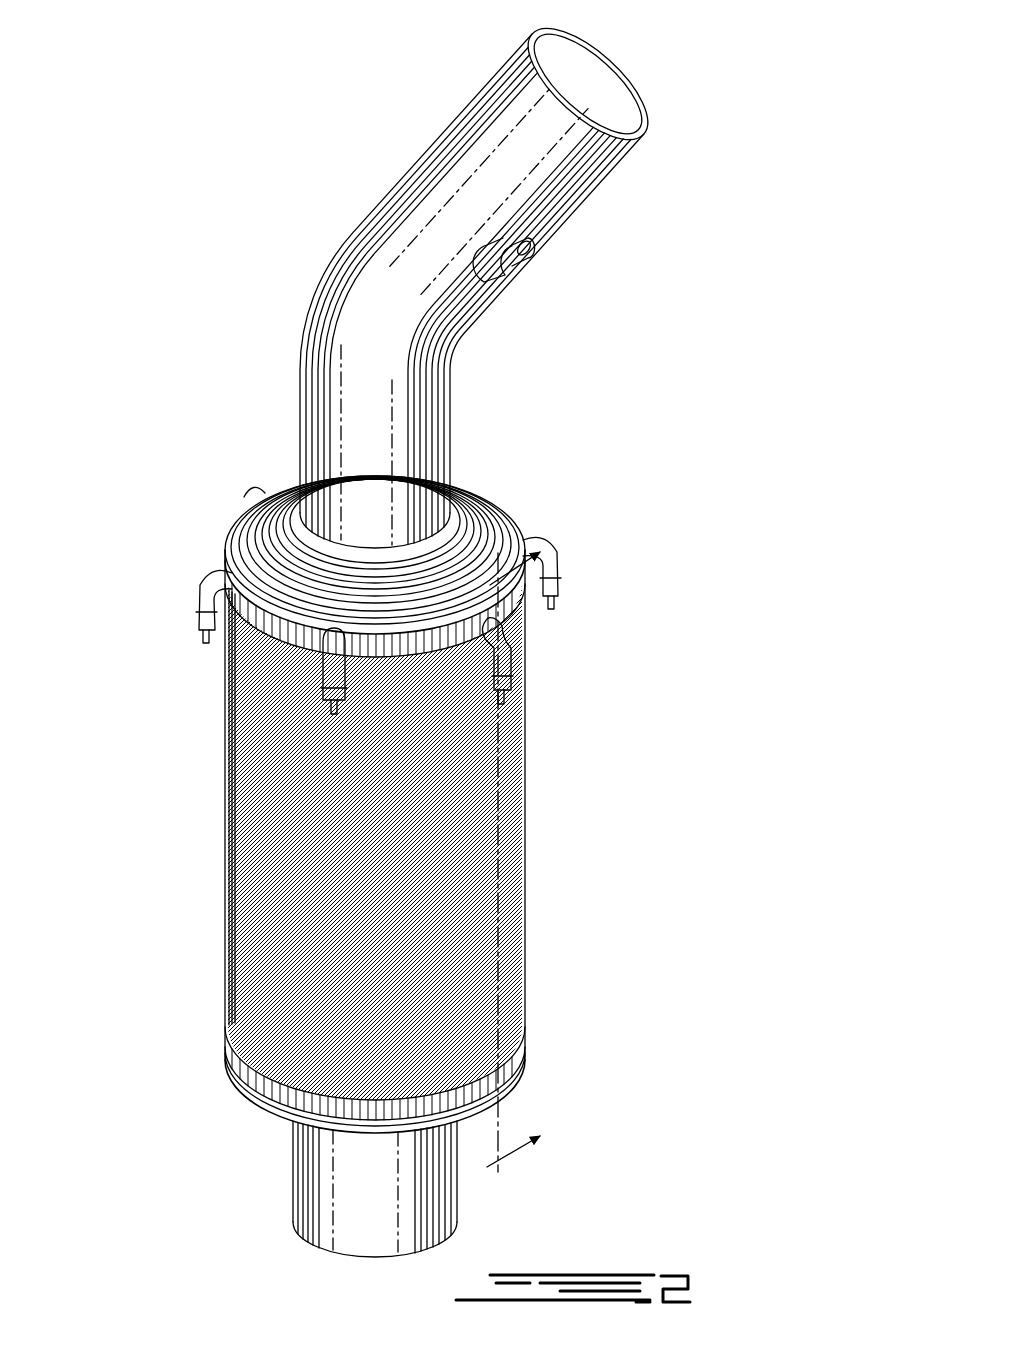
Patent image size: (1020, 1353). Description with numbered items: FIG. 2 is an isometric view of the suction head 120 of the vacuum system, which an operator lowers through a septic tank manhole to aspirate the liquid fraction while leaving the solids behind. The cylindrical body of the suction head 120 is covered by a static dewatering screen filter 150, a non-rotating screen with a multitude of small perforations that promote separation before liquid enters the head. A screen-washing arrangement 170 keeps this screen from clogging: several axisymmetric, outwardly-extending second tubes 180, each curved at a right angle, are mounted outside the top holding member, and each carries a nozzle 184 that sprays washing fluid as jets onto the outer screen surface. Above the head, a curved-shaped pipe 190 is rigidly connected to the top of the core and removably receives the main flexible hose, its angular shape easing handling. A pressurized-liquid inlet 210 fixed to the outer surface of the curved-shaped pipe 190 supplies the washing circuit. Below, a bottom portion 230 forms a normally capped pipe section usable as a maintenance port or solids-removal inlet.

The suction head 120 is at (176, 288).
The screen filter 150 is at (522, 908).
The screen-washing arrangement 170 is at (202, 580).
The second tube 180 is at (540, 538).
The nozzle 184 is at (196, 626).
The curved-shaped pipe 190 is at (400, 210).
The pressurized-liquid inlet 210 is at (518, 258).
The bottom portion 230 is at (320, 1182).